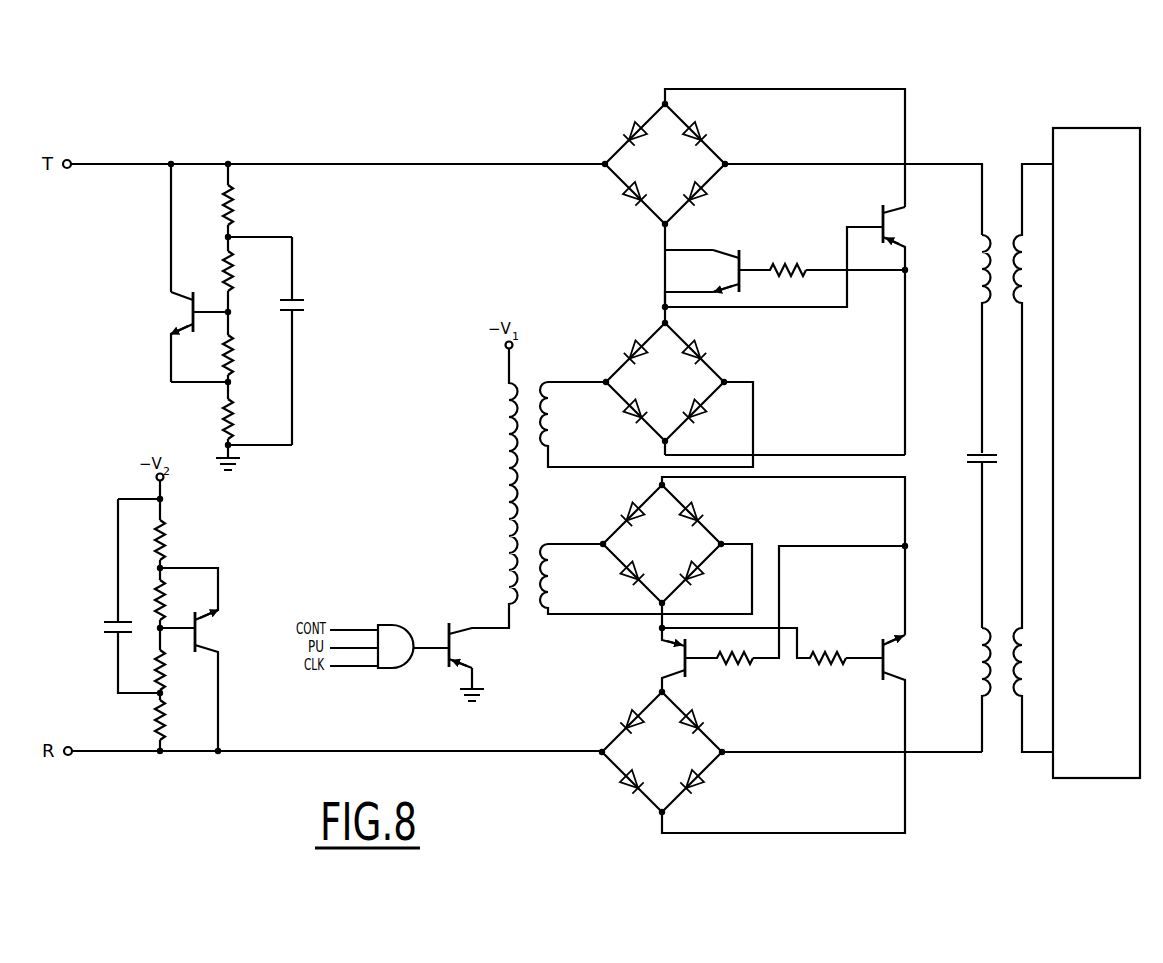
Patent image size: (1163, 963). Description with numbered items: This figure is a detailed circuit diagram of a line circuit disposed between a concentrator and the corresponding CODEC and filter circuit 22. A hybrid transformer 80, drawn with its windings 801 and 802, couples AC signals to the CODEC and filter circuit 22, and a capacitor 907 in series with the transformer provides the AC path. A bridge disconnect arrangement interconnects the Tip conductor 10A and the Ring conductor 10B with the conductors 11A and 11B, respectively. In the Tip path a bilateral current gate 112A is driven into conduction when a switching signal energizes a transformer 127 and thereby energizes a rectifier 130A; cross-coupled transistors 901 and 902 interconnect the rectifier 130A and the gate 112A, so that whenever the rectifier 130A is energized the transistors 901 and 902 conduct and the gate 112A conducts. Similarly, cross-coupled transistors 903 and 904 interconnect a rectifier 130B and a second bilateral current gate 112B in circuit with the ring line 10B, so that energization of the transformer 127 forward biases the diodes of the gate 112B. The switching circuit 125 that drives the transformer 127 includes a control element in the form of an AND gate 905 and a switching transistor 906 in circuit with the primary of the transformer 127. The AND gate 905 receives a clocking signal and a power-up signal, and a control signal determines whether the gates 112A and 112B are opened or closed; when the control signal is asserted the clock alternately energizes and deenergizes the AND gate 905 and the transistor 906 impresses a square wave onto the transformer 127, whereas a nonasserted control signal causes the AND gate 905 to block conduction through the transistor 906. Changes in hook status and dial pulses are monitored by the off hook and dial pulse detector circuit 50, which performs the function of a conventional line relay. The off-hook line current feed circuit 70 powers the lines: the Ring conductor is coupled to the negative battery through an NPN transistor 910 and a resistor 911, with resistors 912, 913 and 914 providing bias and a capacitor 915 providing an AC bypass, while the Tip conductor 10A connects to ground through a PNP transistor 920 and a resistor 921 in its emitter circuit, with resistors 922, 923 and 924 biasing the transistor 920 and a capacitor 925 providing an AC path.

The Tip conductor 10A is at (150, 162).
The Ring conductor 10B is at (120, 751).
The conductor 11A is at (975, 165).
The conductor 11B is at (950, 762).
The CODEC and filter circuit 22 is at (1090, 128).
The off hook and dial pulse detector circuit 50 is at (618, 215).
The off-hook line current feed circuit 70 is at (108, 465).
The hybrid transformer 80 is at (1003, 225).
The switching circuit 125 is at (451, 707).
The transformer 127 is at (536, 480).
The bilateral current gate 112A is at (665, 164).
The bilateral current gate 112B is at (662, 752).
The rectifier 130A is at (646, 395).
The rectifier 130B is at (722, 556).
The transformer winding 801 is at (977, 660).
The transformer winding 802 is at (985, 270).
The transistor 901 is at (735, 272).
The transistor 902 is at (893, 225).
The transistor 903 is at (680, 658).
The transistor 904 is at (890, 670).
The AND gate 905 is at (385, 625).
The switching transistor 906 is at (456, 648).
The capacitor 907 is at (972, 455).
The NPN transistor 910 is at (200, 626).
The resistor 911 is at (165, 540).
The resistor 912 is at (165, 600).
The resistor 913 is at (165, 672).
The resistor 914 is at (155, 718).
The capacitor 915 is at (113, 625).
The PNP transistor 920 is at (190, 315).
The resistor 921 is at (220, 415).
The resistor 922 is at (232, 340).
The resistor 923 is at (235, 272).
The resistor 924 is at (238, 205).
The capacitor 925 is at (302, 303).